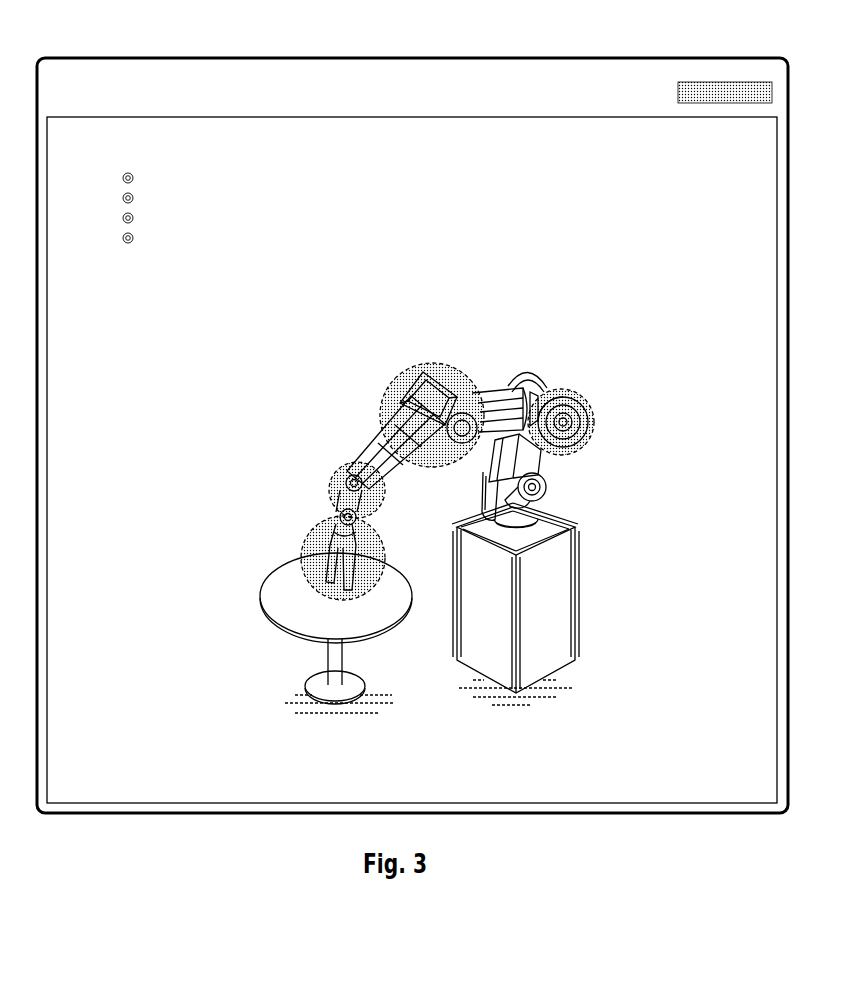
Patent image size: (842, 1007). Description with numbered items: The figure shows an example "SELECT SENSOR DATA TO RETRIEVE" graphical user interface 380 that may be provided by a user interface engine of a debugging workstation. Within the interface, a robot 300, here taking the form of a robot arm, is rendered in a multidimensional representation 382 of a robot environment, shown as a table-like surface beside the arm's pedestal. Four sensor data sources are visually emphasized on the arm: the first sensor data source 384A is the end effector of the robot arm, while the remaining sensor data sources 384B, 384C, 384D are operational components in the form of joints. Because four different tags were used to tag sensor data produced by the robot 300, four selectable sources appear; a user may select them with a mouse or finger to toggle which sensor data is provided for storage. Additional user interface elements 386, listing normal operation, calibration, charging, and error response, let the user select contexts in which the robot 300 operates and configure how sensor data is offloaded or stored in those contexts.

The graphical user interface 380 is at (497, 56).
The multidimensional representation 382 is at (225, 573).
The first sensor data source 384A is at (304, 532).
The sensor data source 384B is at (341, 467).
The sensor data source 384C is at (388, 385).
The sensor data source 384D is at (583, 393).
The user interface elements 386 is at (282, 199).
The robot 300 is at (628, 458).